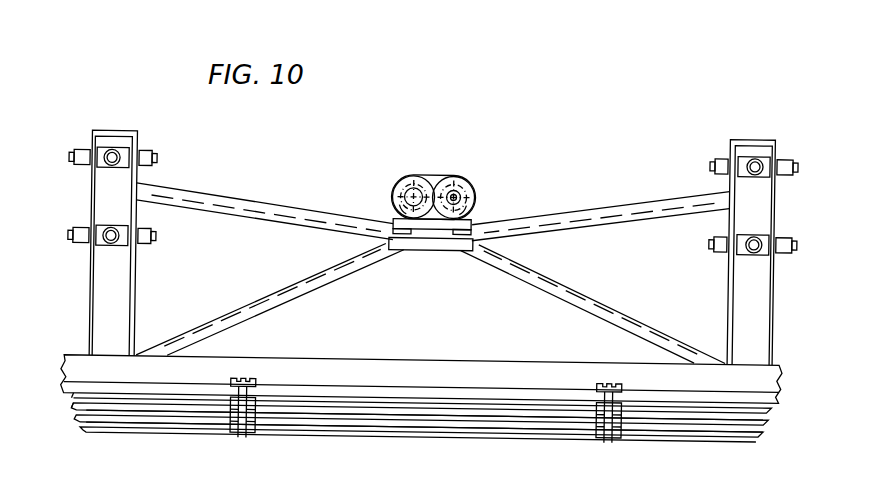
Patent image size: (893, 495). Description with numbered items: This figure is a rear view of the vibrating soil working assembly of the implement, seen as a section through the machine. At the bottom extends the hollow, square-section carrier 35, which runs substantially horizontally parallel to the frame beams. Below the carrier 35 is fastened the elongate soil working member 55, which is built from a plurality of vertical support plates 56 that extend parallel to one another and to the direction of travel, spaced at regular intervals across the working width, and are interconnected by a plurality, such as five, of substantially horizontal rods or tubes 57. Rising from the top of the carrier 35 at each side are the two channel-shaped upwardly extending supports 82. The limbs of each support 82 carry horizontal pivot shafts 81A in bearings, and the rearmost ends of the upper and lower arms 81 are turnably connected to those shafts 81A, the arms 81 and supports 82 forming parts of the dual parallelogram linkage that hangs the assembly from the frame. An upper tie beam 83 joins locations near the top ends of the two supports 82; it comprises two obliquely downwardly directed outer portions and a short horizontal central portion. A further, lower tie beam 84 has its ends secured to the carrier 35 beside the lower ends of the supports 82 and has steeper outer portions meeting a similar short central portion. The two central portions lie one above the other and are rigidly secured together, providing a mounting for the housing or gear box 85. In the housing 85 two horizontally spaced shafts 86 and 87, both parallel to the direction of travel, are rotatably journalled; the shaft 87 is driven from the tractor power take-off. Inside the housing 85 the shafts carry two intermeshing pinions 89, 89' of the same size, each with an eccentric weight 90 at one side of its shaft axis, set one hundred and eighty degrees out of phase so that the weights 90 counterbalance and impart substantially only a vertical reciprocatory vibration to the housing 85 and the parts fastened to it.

The carrier 35 is at (476, 360).
The elongate soil working member 55 is at (165, 442).
The vertical support plates 56 is at (244, 441).
The rods or tubes 57 is at (465, 424).
The upper and lower arms 81 is at (116, 172).
The horizontal pivot shafts 81A is at (152, 160).
The upwardly extending supports 82 is at (131, 302).
The tie beam 83 is at (248, 212).
The further tie beam 84 is at (285, 298).
The housing or gear box 85 is at (432, 175).
The shaft 86 is at (458, 196).
The shaft 87 is at (403, 198).
The pinions 89 is at (409, 181).
The axis 89' is at (467, 181).
The eccentric weight 90 is at (396, 209).